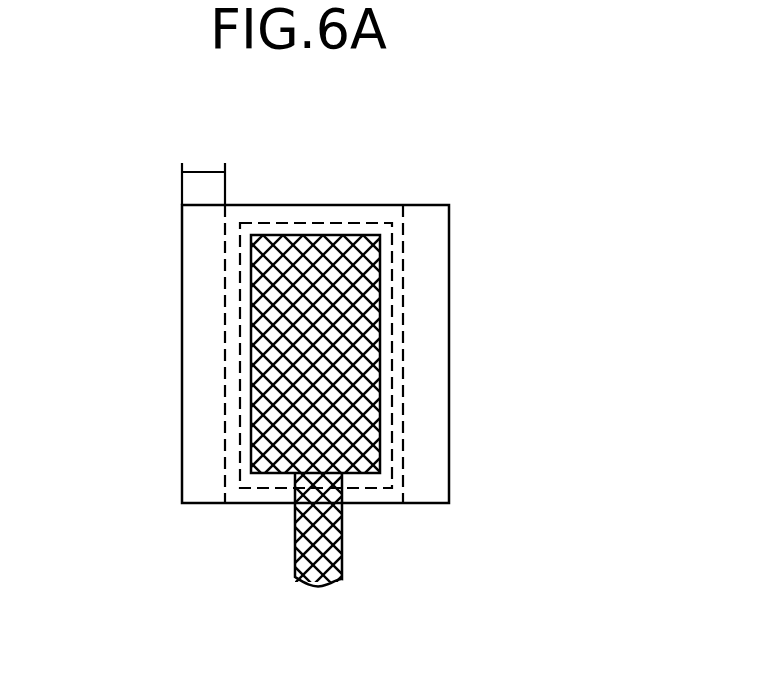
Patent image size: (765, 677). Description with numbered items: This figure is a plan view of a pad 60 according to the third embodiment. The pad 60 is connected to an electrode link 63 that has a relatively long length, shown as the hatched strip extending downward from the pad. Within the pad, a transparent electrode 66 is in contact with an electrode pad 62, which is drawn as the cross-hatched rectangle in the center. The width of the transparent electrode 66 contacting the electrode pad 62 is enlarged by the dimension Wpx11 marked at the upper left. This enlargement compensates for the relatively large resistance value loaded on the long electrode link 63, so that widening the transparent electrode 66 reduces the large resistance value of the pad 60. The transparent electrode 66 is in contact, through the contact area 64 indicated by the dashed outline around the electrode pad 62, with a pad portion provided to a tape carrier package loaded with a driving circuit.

The pad 60 is at (366, 146).
The electrode pad 62 is at (374, 414).
The electrode link 63 is at (337, 543).
The contact area 64 is at (392, 462).
The transparent electrode 66 is at (205, 369).